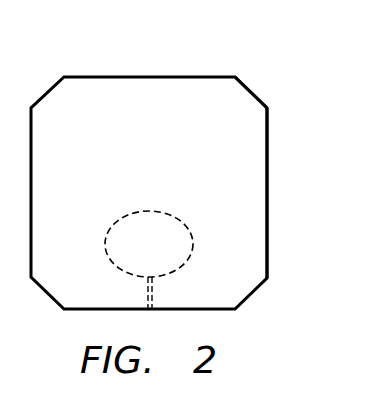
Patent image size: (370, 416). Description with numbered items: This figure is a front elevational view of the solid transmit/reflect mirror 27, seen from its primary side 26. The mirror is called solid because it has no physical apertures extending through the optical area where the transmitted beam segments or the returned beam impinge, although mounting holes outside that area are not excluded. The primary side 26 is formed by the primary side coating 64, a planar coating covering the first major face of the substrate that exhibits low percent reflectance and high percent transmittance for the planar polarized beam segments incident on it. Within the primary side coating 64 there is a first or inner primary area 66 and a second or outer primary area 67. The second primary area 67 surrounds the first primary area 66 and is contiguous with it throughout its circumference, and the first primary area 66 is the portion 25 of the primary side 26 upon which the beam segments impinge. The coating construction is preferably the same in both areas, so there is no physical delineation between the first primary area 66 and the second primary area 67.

The portion of the primary side 25 is at (178, 216).
The primary side 26 is at (234, 108).
The solid transmit/reflect mirror 27 is at (114, 69).
The primary side coating 64 is at (162, 156).
The first primary area 66 is at (162, 260).
The second primary area 67 is at (257, 232).